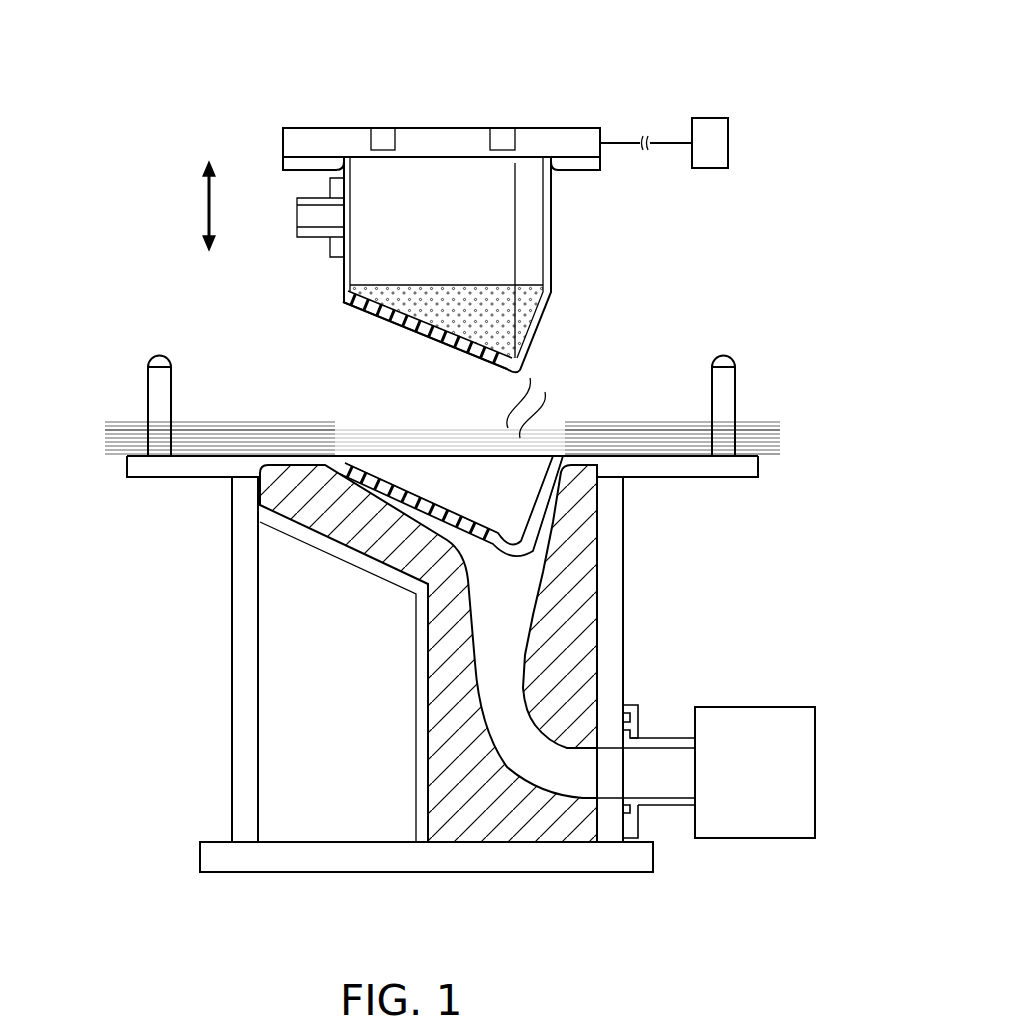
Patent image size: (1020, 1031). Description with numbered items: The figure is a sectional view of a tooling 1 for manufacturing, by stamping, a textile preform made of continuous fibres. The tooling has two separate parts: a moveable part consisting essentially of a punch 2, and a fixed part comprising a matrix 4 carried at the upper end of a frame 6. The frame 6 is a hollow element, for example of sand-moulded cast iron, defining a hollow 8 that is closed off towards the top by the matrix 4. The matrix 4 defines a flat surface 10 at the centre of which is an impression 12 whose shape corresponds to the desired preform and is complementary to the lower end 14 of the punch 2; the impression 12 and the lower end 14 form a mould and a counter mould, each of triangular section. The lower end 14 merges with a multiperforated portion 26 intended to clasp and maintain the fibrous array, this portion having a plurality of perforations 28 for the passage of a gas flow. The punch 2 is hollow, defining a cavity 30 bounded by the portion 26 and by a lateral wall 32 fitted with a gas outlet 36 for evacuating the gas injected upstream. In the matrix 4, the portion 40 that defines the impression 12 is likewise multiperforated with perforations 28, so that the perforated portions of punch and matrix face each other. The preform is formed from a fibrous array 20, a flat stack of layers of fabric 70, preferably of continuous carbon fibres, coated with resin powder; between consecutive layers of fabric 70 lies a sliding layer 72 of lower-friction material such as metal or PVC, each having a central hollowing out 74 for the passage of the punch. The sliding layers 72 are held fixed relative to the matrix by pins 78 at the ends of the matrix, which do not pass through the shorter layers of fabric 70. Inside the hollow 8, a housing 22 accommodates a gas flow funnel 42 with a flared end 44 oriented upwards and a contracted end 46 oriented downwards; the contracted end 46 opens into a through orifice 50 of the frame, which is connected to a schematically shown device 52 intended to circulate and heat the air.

The tooling 1 is at (228, 78).
The punch 2 is at (358, 112).
The cavity 30 is at (420, 172).
The lateral wall 32 is at (552, 206).
The lower end 14 is at (540, 318).
The gas outlet 36 is at (310, 198).
The multiperforated portion 26 is at (400, 323).
The perforations 28 is at (378, 316).
The portion 40 is at (425, 458).
The fibrous array 20 is at (226, 414).
The sliding layer 72 is at (298, 430).
The flat surface 10 is at (655, 452).
The layers of fabric 70 is at (503, 430).
The central hollowing out 74 is at (530, 440).
The pins 78 is at (158, 378).
The frame 6 is at (243, 560).
The matrix 4 is at (172, 464).
The housing 22 is at (322, 533).
The hollow 8 is at (347, 676).
The gas flow funnel 42 is at (580, 604).
The impression 12 is at (498, 496).
The flared end 44 is at (575, 455).
The contracted end 46 is at (598, 770).
The through orifice 50 is at (612, 798).
The device 52 is at (758, 700).